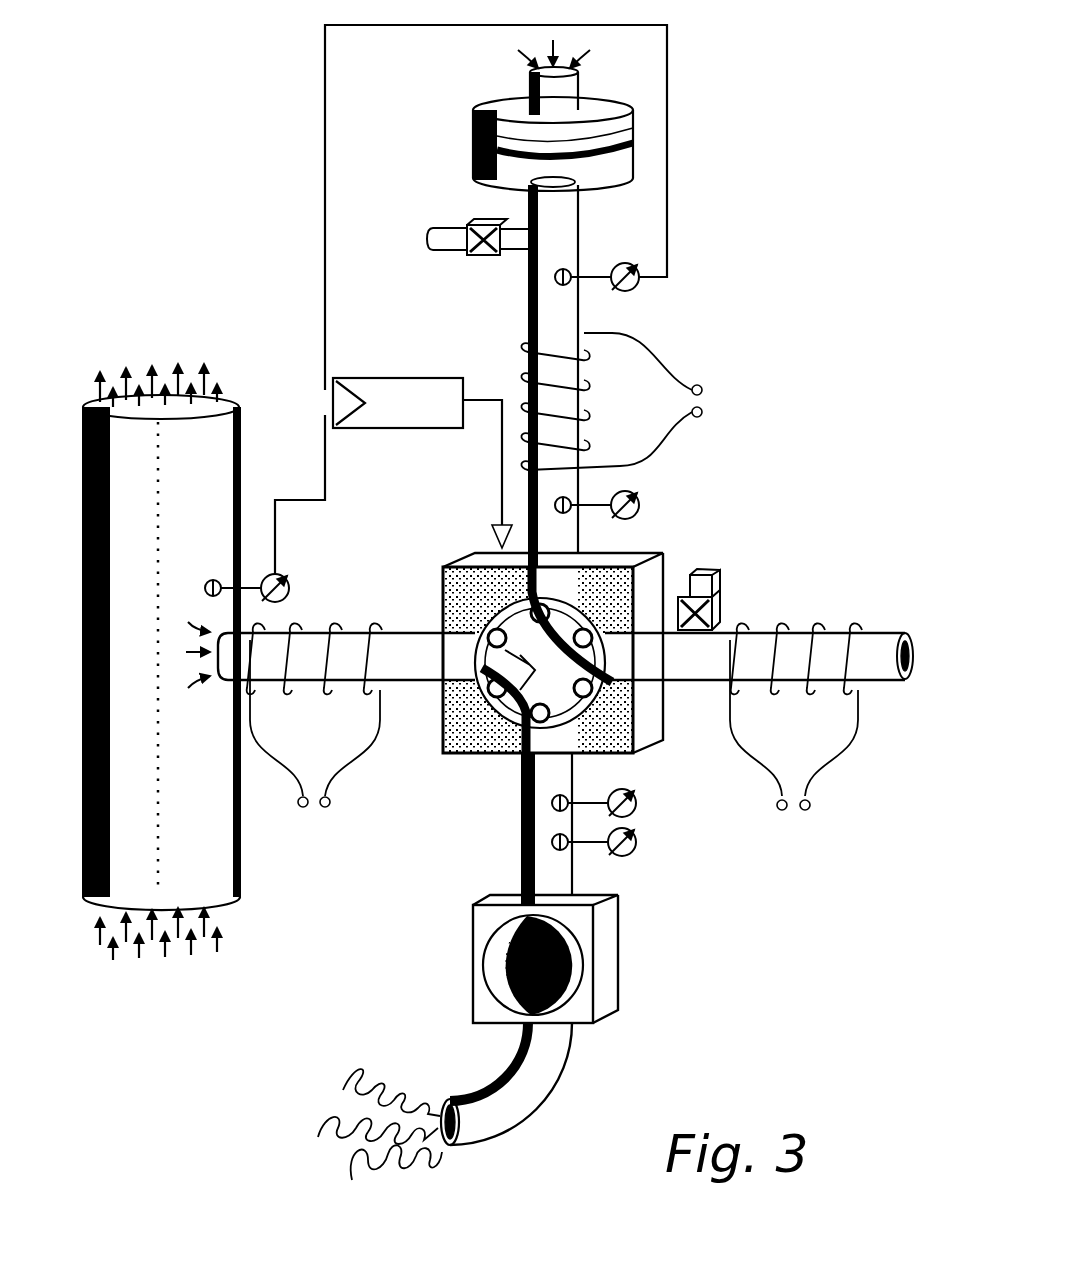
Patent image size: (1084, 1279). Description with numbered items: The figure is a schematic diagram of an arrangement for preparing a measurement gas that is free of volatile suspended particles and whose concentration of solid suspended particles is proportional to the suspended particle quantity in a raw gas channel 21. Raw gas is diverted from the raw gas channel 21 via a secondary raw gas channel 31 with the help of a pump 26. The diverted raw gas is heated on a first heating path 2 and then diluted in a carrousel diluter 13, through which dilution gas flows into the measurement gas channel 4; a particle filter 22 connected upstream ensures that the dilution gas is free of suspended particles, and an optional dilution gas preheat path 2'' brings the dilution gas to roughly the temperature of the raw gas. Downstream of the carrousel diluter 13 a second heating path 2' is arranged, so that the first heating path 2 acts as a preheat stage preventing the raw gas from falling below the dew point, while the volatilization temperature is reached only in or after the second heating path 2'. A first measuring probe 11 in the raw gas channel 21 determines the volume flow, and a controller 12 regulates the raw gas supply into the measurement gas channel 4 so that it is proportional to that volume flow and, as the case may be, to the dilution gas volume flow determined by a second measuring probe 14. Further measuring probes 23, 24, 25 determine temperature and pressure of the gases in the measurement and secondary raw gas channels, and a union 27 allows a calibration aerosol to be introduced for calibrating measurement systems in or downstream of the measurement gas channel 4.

The first heating path 2 is at (314, 612).
The second heating path 2' is at (770, 669).
The dilution gas preheat path 2'' is at (581, 392).
The measurement gas channel 4 is at (875, 650).
The first measuring probe 11 is at (298, 592).
The controller 12 is at (398, 395).
The carrousel diluter 13 is at (490, 570).
The second measuring probe 14 is at (641, 290).
The raw gas channel 21 is at (205, 492).
The particle filter 22 is at (497, 140).
The measuring probe 23 is at (645, 512).
The measuring probe 24 is at (643, 800).
The measuring probe 25 is at (640, 848).
The pump 26 is at (576, 996).
The union 27 is at (454, 232).
The secondary raw gas channel 31 is at (398, 655).